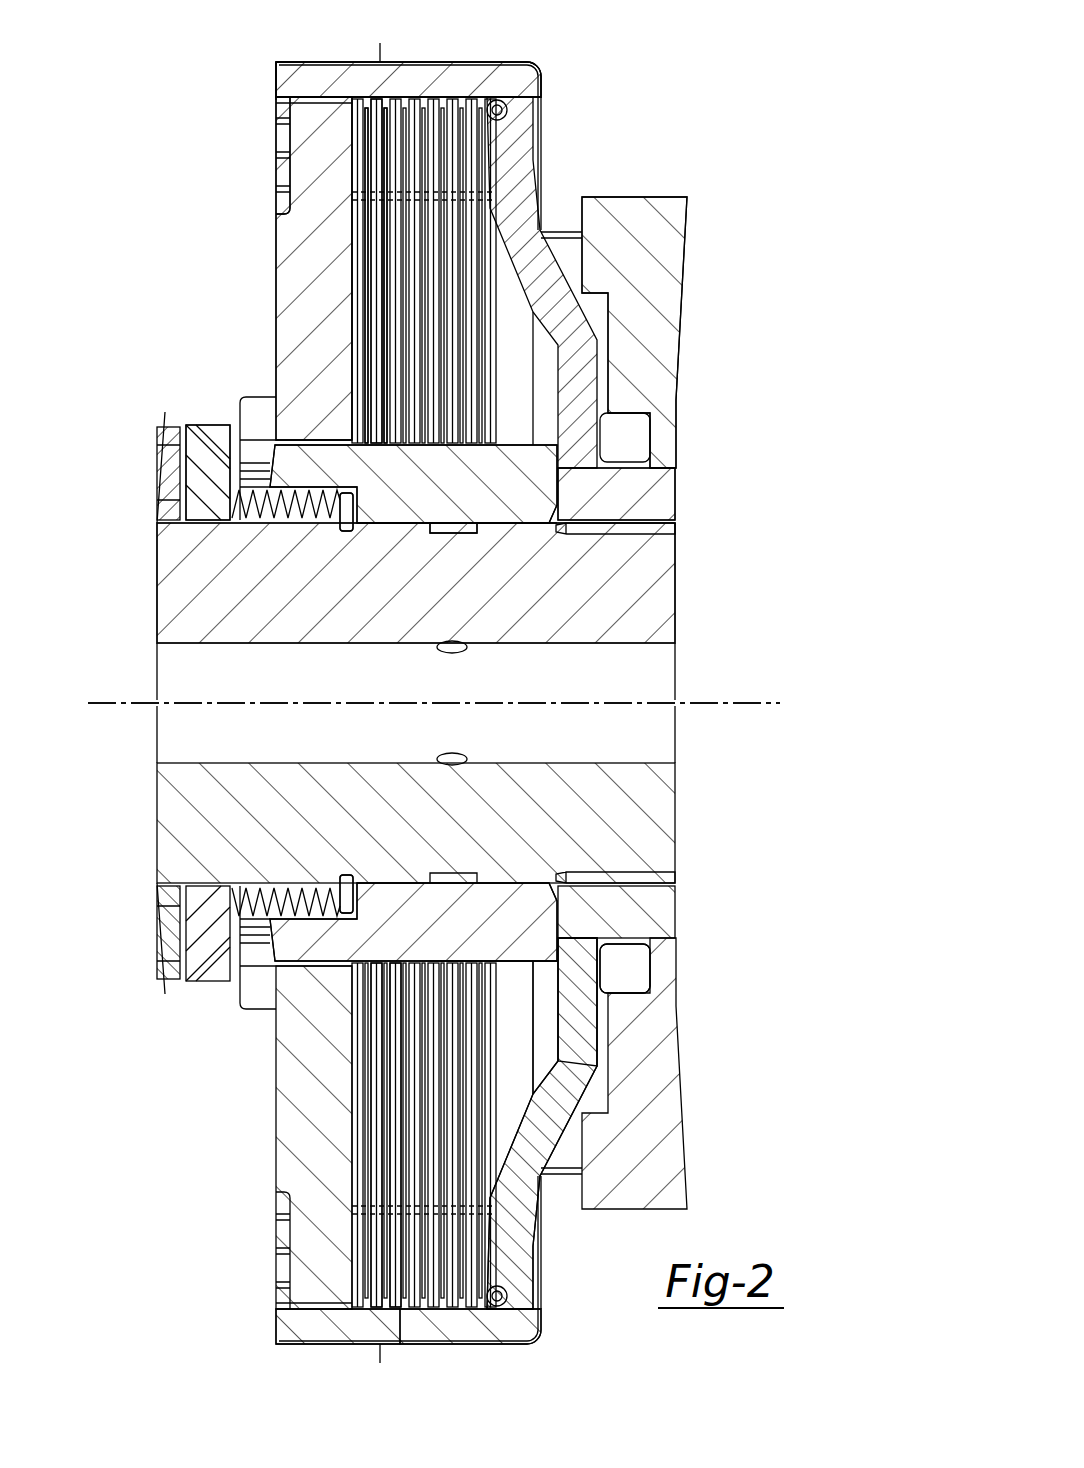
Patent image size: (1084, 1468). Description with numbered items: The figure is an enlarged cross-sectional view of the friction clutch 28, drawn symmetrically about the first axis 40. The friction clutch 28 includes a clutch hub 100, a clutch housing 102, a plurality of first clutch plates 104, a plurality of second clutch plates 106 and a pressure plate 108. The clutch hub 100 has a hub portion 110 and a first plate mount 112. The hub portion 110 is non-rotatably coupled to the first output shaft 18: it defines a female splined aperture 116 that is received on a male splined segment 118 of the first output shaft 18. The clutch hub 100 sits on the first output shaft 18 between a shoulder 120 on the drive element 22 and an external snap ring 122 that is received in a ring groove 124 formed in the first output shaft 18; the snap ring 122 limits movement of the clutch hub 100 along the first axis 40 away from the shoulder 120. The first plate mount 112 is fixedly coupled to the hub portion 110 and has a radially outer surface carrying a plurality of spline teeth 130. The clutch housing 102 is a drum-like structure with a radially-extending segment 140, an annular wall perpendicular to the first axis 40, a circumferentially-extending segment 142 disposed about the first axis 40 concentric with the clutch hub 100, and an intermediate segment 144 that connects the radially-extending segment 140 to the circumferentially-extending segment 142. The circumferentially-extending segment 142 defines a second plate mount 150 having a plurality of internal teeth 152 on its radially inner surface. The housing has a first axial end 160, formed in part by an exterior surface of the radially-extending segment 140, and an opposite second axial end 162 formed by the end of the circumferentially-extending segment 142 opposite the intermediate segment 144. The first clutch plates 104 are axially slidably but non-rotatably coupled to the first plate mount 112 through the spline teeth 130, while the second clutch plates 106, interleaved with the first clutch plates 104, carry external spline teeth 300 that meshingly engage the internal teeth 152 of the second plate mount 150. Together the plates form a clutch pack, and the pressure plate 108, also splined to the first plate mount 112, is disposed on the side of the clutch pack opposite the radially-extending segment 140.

The first output shaft 18 is at (645, 592).
The drive element 22 is at (618, 368).
The friction clutch 28 is at (568, 86).
The first axis 40 is at (735, 695).
The clutch hub 100 is at (300, 470).
The clutch housing 102 is at (490, 76).
The first clutch plates 104 is at (350, 377).
The second clutch plates 106 is at (390, 112).
The pressure plate 108 is at (305, 262).
The hub portion 110 is at (417, 893).
The first plate mount 112 is at (437, 477).
The female splined aperture 116 is at (468, 515).
The male splined segment 118 is at (513, 528).
The shoulder 120 is at (590, 495).
The external snap ring 122 is at (347, 525).
The ring groove 124 is at (345, 880).
The spline teeth 130 is at (515, 950).
The radially-extending segment 140 is at (580, 1013).
The circumferentially-extending segment 142 is at (465, 1328).
The intermediate segment 144 is at (525, 1158).
The second plate mount 150 is at (297, 1327).
The internal teeth 152 is at (290, 143).
The first axial end 160 is at (600, 980).
The second axial end 162 is at (276, 78).
The external spline teeth 300 is at (392, 1305).